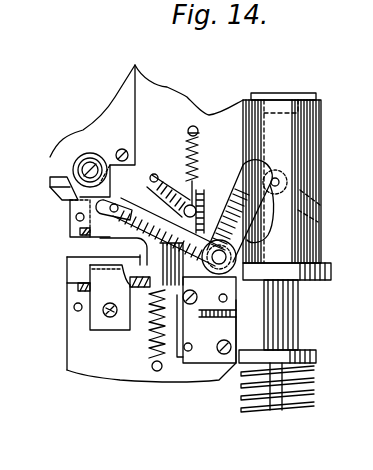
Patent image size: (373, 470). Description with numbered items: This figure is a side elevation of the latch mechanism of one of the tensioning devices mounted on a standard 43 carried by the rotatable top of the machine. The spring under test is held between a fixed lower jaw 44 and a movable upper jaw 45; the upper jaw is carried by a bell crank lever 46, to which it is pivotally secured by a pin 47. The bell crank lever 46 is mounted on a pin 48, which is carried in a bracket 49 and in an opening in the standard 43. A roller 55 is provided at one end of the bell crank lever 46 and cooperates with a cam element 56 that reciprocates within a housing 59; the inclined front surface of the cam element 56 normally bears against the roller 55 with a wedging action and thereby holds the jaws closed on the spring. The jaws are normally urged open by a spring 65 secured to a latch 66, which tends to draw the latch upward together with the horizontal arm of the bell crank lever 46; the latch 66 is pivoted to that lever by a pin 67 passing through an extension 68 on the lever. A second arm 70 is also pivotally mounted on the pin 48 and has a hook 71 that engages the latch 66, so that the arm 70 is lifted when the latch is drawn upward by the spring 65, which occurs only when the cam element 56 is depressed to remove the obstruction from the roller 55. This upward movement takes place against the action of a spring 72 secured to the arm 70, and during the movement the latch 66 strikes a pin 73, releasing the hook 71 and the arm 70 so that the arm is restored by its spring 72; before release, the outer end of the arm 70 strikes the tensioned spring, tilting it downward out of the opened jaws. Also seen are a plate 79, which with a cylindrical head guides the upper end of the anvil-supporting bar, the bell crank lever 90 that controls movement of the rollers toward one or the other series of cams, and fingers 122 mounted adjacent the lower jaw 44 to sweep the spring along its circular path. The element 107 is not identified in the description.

The standard 43 is at (163, 97).
The plate 79 is at (102, 133).
The bell crank lever 90 is at (50, 157).
The housing 59 is at (309, 127).
The cam element 56 is at (313, 200).
The member 107 is at (358, 142).
The bell crank lever 46 is at (236, 200).
The roller 55 is at (266, 170).
The pin 48 is at (218, 274).
The hook 71 is at (170, 228).
The pin 47 is at (128, 197).
The pin 73 is at (153, 173).
The pin 67 is at (190, 135).
The spring 65 is at (200, 152).
The latch 66 is at (201, 193).
The extension 68 is at (203, 210).
The movable upper jaw 45 is at (90, 212).
The fingers 122 is at (137, 258).
The fixed lower jaw 44 is at (98, 297).
The spring 72 is at (150, 342).
The second arm 70 is at (195, 340).
The bracket 49 is at (208, 350).